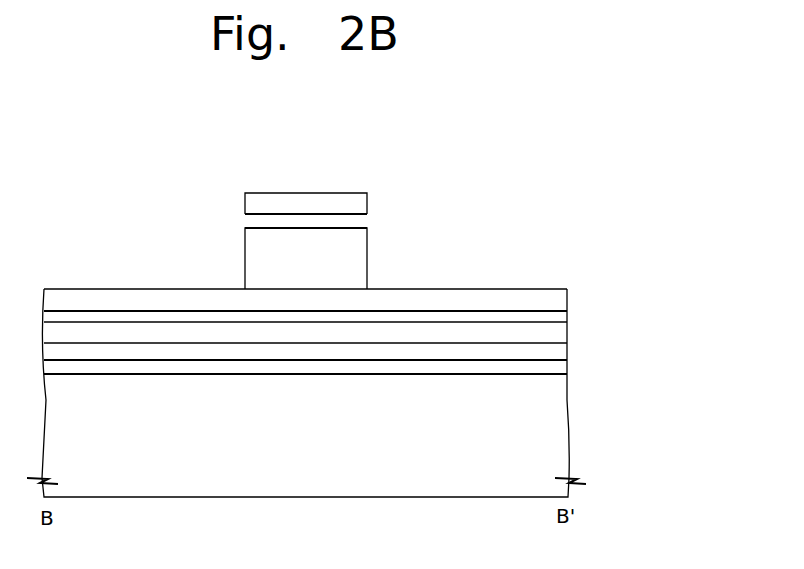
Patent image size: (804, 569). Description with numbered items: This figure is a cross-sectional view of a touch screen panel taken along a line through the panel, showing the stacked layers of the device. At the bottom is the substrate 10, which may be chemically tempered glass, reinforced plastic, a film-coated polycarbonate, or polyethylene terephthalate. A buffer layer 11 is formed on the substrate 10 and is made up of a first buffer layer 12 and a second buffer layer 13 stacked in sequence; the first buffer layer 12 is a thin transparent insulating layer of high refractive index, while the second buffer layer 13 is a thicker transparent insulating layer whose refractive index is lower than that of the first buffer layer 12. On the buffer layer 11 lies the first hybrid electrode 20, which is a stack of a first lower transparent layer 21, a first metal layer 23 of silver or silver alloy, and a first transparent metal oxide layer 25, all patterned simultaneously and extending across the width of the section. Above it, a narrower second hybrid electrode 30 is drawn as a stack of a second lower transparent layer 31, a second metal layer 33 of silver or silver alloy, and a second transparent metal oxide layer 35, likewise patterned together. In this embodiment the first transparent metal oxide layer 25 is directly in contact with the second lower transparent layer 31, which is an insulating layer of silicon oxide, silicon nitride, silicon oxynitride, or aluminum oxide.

The substrate 10 is at (556, 426).
The buffer layer 11 is at (363, 369).
The first buffer layer 12 is at (563, 372).
The second buffer layer 13 is at (563, 353).
The first hybrid electrode 20 is at (363, 303).
The first lower transparent layer 21 is at (563, 326).
The first metal layer 23 is at (563, 318).
The first transparent metal oxide layer 25 is at (565, 297).
The second hybrid electrode 30 is at (361, 237).
The second lower transparent layer 31 is at (355, 257).
The second metal layer 33 is at (355, 220).
The second transparent metal oxide layer 35 is at (336, 201).